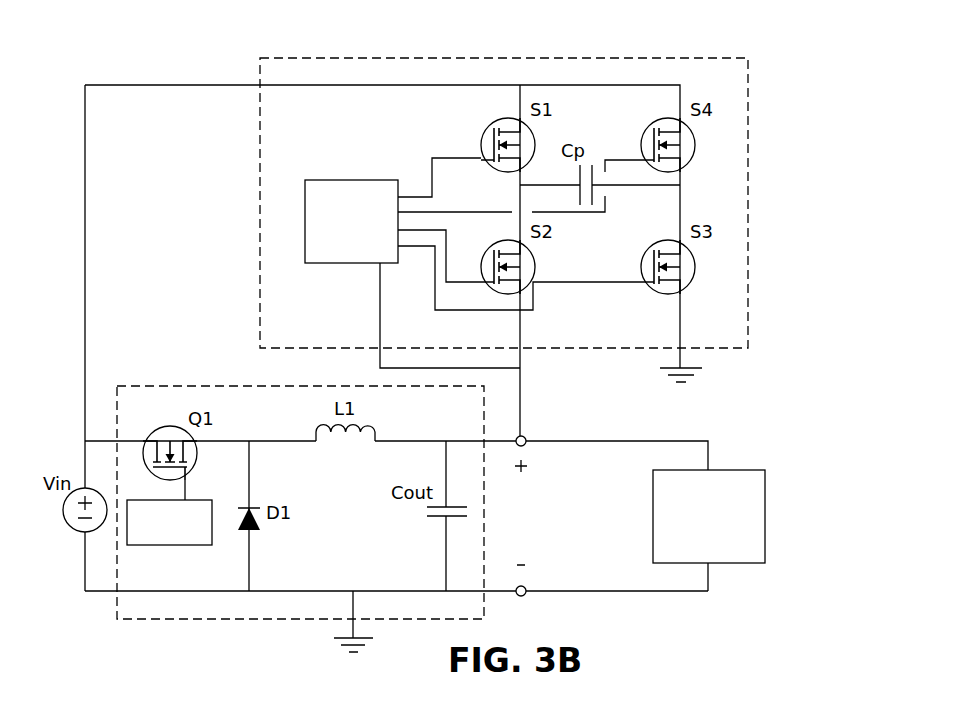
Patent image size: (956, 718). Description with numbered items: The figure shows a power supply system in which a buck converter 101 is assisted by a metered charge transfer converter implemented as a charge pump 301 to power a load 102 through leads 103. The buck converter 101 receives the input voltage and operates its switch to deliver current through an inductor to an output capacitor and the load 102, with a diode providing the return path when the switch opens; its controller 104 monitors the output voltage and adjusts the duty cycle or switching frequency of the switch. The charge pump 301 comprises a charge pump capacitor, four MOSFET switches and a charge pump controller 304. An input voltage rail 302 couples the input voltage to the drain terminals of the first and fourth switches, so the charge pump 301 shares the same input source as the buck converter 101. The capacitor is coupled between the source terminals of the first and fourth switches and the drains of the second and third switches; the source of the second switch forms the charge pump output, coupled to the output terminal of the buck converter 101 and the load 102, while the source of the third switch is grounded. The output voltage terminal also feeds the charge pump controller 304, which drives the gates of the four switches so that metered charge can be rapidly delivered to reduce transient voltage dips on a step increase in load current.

The charge pump 301 is at (748, 158).
The input voltage rail 302 is at (288, 86).
The charge pump controller 304 is at (318, 170).
The buck converter 101 is at (200, 619).
The load 102 is at (745, 563).
The leads 103 is at (560, 441).
The controller 104 is at (145, 545).